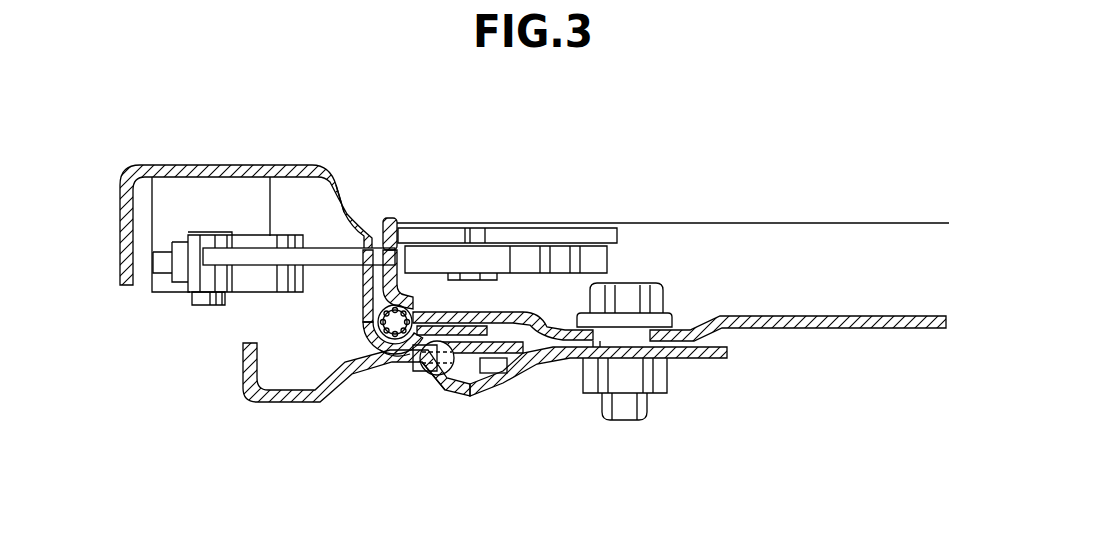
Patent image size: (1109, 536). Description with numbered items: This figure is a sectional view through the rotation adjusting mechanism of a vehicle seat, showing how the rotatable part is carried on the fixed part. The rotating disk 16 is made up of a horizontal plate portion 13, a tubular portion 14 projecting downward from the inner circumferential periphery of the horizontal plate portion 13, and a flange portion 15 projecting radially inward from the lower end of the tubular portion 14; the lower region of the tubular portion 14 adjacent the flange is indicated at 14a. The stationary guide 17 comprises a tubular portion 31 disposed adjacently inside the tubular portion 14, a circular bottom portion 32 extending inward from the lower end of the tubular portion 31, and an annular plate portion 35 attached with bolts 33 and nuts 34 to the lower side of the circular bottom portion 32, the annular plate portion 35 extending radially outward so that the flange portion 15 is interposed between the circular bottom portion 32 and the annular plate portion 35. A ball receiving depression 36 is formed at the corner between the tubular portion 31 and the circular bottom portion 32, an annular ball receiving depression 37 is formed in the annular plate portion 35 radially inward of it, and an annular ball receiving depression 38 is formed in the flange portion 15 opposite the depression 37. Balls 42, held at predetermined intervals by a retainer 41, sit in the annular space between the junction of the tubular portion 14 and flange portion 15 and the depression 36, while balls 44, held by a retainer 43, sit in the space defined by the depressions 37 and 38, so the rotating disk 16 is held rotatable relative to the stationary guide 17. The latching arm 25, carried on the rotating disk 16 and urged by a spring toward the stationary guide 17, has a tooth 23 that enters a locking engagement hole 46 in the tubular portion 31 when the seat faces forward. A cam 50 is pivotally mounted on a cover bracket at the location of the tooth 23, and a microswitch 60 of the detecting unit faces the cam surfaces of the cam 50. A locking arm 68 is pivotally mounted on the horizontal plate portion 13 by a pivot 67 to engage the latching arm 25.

The horizontal plate portion 13 is at (263, 165).
The tubular portion 14 is at (363, 227).
The hook portion of lever 14a is at (360, 280).
The flange portion 15 is at (483, 373).
The rotating disk 16 is at (180, 164).
The stationary guide 17 is at (755, 245).
The tooth 23 is at (377, 223).
The latching arm 25 is at (320, 248).
The tubular portion 31 is at (391, 217).
The circular bottom portion 32 is at (525, 352).
The bolt 33 is at (635, 284).
The nut 34 is at (670, 380).
The annular plate portion 35 is at (367, 383).
The ball receiving depression 36 is at (413, 312).
The annular ball receiving depression 37 is at (427, 386).
The annular ball receiving depression 38 is at (480, 309).
The retainer 41 is at (378, 347).
The balls 42 is at (365, 308).
The retainer 43 is at (500, 368).
The balls 44 is at (442, 376).
The locking engagement hole 46 is at (407, 227).
The cam 50 is at (490, 261).
The microswitch 60 is at (587, 261).
The pivot 67 is at (197, 304).
The locking arm 68 is at (250, 287).